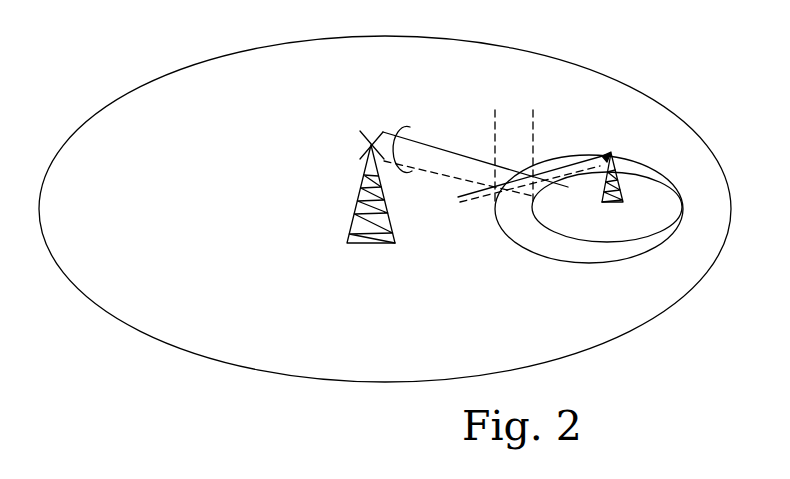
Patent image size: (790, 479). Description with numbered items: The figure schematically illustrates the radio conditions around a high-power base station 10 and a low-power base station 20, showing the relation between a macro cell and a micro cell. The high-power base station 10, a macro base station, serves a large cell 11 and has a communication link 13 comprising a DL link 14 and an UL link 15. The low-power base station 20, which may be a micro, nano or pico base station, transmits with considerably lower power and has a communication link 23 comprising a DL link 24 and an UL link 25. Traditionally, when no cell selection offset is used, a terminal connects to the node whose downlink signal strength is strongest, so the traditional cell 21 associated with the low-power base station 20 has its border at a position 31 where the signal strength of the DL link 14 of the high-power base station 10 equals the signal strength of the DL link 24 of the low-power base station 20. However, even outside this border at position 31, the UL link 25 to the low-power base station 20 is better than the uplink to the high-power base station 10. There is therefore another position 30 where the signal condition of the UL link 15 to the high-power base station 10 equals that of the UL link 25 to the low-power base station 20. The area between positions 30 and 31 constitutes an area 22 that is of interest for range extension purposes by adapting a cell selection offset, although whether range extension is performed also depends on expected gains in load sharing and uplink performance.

The high-power base station 10 is at (370, 244).
The cell 11 is at (613, 336).
The communication link 13 is at (407, 130).
The DL link 14 is at (473, 158).
The UL link 15 is at (445, 178).
The low-power base station 20 is at (626, 168).
The cell 21 is at (640, 239).
The area 22 is at (535, 238).
The communication link 23 is at (591, 156).
The DL link 24 is at (564, 158).
The UL link 25 is at (483, 199).
The position 30 is at (495, 109).
The position 31 is at (537, 128).